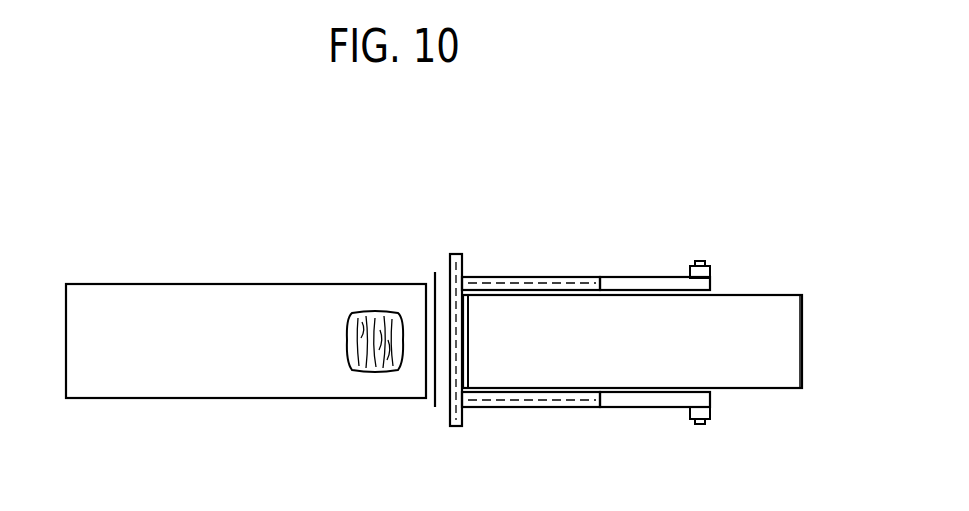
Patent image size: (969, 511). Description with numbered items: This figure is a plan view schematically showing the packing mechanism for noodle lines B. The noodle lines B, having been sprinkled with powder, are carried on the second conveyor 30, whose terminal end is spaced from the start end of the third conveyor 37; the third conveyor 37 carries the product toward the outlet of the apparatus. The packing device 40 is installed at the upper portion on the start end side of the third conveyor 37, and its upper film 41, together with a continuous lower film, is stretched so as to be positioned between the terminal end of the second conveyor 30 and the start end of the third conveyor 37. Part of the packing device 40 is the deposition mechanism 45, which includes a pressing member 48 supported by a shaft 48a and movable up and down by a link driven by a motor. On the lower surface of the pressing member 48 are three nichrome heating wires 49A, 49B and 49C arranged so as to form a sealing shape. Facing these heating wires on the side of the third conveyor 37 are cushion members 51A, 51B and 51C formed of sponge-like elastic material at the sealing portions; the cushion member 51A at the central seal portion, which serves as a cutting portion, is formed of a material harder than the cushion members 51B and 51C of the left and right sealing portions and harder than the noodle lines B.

The second conveyor 30 is at (187, 382).
The noodle lines B is at (348, 325).
The upper film 41 is at (437, 277).
The cushion member 51A is at (448, 410).
The heating wire 49A is at (463, 270).
The heating wire 49B is at (508, 410).
The heating wire 49C is at (585, 277).
The shaft 48a is at (700, 260).
The pressing member 48 is at (590, 407).
The third conveyor 37 is at (773, 367).
The deposition mechanism 45 is at (523, 278).
The cushion member 51C is at (553, 277).
The cushion member 51B is at (558, 410).
The packing device 40 is at (577, 257).